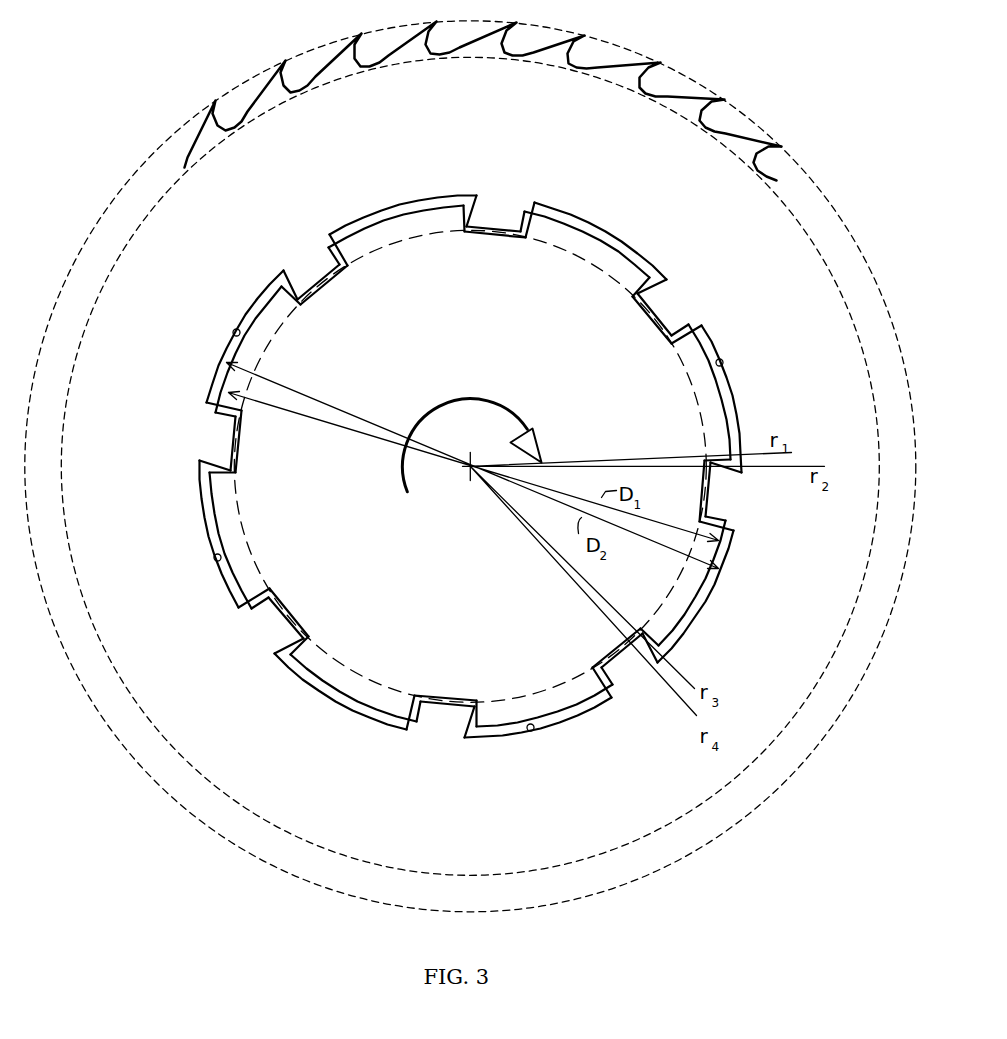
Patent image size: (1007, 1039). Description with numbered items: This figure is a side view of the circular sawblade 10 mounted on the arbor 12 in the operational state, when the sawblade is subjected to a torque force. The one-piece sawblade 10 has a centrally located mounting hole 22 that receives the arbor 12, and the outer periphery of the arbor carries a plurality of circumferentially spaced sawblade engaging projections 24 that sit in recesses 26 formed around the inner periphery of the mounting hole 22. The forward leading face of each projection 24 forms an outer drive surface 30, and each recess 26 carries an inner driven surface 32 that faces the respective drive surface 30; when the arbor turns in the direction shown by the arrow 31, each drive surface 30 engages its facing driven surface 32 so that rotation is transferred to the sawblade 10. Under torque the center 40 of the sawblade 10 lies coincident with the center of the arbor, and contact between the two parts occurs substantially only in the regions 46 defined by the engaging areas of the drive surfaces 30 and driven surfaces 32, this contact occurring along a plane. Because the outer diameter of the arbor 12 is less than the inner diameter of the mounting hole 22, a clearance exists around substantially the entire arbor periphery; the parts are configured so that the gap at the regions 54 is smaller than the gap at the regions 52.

The circular sawblade 10 is at (385, 147).
The arbor 12 is at (508, 602).
The mounting hole 22 is at (535, 728).
The sawblade engaging projections 24 is at (233, 379).
The recesses 26 is at (233, 330).
The outer drive surface 30 is at (467, 222).
The arrow 31 is at (395, 449).
The inner driven surface 32 is at (476, 192).
The center of the sawblade 40 is at (466, 474).
The regions 46 is at (296, 287).
The regions 52 is at (377, 716).
The regions 54 is at (459, 697).